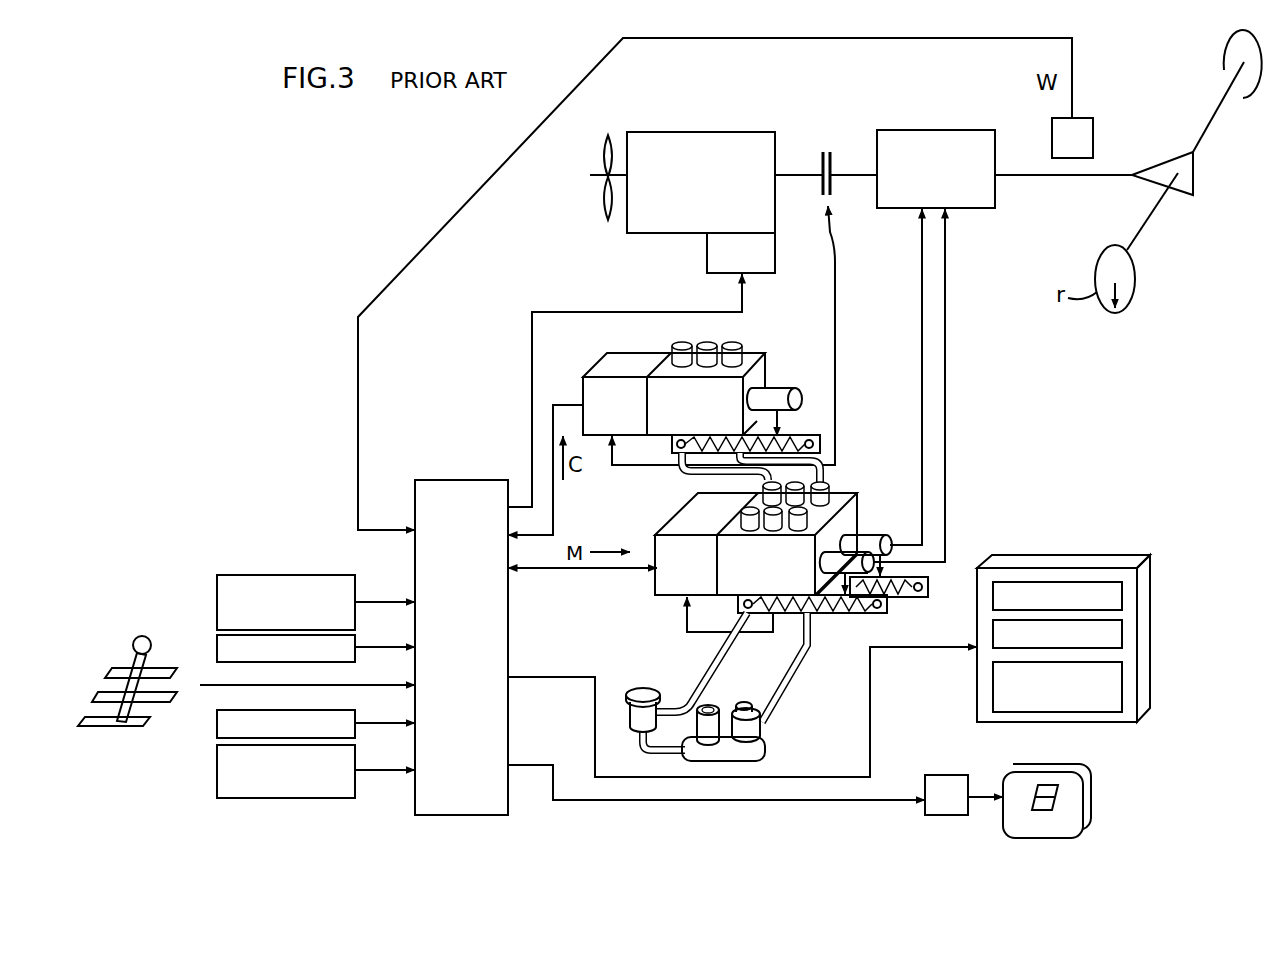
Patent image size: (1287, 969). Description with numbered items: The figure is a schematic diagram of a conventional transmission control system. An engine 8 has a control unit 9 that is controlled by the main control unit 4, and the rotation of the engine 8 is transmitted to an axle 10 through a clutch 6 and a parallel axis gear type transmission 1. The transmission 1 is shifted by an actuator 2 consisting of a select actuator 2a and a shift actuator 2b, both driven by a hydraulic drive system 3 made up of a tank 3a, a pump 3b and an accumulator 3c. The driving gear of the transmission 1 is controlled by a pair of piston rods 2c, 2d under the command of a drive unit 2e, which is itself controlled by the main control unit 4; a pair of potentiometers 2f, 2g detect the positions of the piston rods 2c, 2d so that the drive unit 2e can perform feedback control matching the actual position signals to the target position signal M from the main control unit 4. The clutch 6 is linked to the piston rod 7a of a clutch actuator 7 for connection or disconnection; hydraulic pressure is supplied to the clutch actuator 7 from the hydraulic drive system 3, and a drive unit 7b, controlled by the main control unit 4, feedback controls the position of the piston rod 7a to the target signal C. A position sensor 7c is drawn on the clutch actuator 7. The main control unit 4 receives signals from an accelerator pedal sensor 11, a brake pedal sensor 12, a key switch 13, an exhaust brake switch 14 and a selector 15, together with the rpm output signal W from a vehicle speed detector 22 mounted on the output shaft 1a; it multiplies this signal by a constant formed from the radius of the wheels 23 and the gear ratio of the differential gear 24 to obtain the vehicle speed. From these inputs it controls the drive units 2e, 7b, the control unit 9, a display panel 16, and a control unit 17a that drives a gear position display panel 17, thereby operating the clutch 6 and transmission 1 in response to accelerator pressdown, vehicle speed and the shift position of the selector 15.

The parallel axis gear type transmission 1 is at (945, 130).
The output shaft 1a is at (1060, 180).
The actuator 2 is at (848, 487).
The select actuator 2a is at (853, 510).
The shift actuator 2b is at (830, 540).
The piston rod 2c is at (890, 540).
The piston rod 2d is at (852, 560).
The drive unit 2e is at (677, 522).
The potentiometer 2f is at (916, 600).
The potentiometer 2g is at (852, 614).
The hydraulic drive system 3 is at (622, 668).
The tank 3a is at (645, 690).
The pump 3b is at (715, 708).
The accumulator 3c is at (760, 716).
The main control unit 4 is at (465, 480).
The clutch 6 is at (828, 150).
The clutch actuator 7 is at (758, 358).
The piston rod 7a is at (790, 387).
The drive unit 7b is at (640, 365).
The clutch stroke sensor 7c is at (822, 437).
The engine 8 is at (750, 132).
The control unit 9 is at (707, 260).
The axle 10 is at (1192, 150).
The accelerator pedal sensor 11 is at (280, 575).
The brake pedal sensor 12 is at (355, 657).
The key switch 13 is at (355, 713).
The exhaust brake switch 14 is at (355, 779).
The selector 15 is at (133, 632).
The display panel 16 is at (1055, 555).
The gear position display panel 17 is at (1005, 772).
The control unit 17a is at (936, 775).
The vehicle speed detector 22 is at (1082, 118).
The wheels 23 is at (1136, 276).
The differential gear 24 is at (1196, 176).